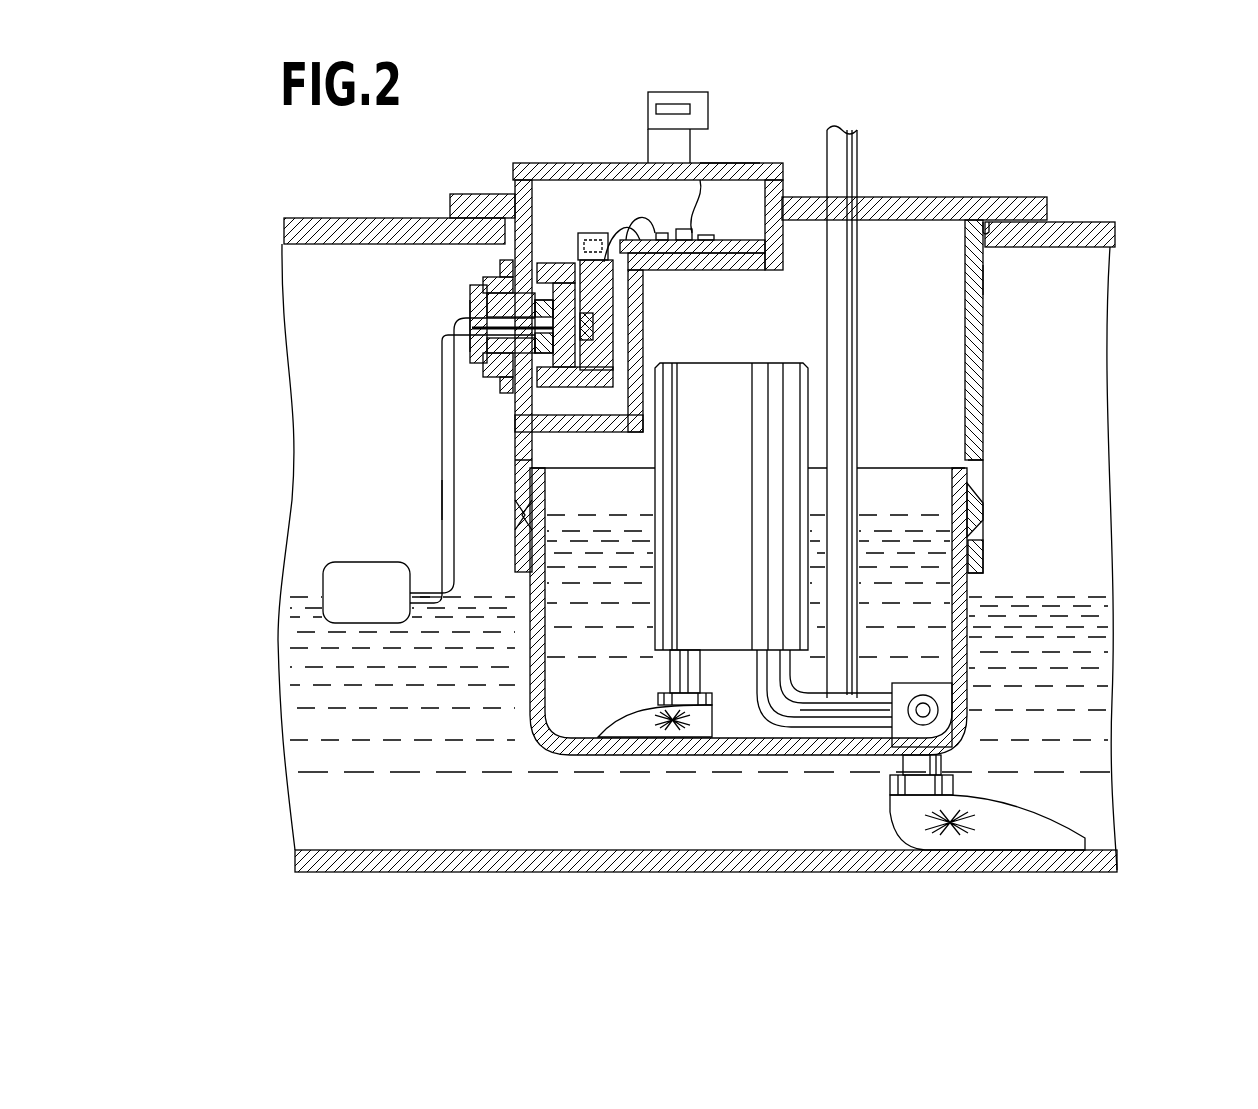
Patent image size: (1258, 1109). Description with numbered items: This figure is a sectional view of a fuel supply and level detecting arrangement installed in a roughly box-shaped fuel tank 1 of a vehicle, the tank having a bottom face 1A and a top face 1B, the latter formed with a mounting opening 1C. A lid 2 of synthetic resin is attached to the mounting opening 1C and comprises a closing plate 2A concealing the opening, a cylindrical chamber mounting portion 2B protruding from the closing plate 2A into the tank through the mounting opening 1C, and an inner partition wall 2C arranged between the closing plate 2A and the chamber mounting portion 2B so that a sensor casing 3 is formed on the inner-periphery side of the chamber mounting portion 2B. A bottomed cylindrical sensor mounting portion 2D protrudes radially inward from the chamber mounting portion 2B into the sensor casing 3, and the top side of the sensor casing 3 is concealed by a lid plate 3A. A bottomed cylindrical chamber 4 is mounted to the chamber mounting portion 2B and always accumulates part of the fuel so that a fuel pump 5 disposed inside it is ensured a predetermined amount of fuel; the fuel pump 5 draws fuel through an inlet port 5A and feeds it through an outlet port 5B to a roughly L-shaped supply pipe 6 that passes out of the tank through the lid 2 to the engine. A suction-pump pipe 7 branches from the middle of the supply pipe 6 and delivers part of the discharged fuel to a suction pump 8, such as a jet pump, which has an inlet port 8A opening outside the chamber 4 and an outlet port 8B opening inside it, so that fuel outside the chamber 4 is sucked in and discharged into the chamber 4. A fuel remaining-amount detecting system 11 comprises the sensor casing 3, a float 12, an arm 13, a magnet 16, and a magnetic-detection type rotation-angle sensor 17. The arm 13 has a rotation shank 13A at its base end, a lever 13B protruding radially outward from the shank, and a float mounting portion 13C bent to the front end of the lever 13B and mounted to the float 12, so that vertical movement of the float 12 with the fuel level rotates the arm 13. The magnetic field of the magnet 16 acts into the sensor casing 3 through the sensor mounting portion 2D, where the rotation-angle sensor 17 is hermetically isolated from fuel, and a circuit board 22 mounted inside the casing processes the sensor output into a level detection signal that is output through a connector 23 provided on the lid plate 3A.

The fuel tank 1 is at (333, 232).
The bottom face 1A is at (381, 862).
The top face 1B is at (1068, 237).
The mounting opening 1C is at (968, 222).
The lid 2 is at (975, 337).
The closing plate 2A is at (885, 205).
The chamber mounting portion 2B is at (975, 280).
The inner partition wall 2C is at (568, 423).
The sensor mounting portion 2D is at (547, 270).
The sensor casing 3 is at (518, 175).
The lid plate 3A is at (742, 172).
The chamber 4 is at (553, 735).
The fuel pump 5 is at (718, 632).
The inlet port 5A is at (682, 660).
The outlet port 5B is at (768, 660).
The supply pipe 6 is at (838, 385).
The suction-pump pipe 7 is at (865, 708).
The suction pump 8 is at (938, 693).
The outlet port 8B is at (935, 715).
The inlet port 8A is at (920, 762).
The fuel remaining-amount detecting system 11 is at (476, 272).
The float 12 is at (347, 600).
The arm 13 is at (445, 532).
The rotation shank 13A is at (488, 305).
The lever 13B is at (443, 500).
The float mounting portion 13C is at (428, 600).
The magnet 16 is at (548, 327).
The rotation-angle sensor 17 is at (566, 262).
The circuit board 22 is at (640, 240).
The connector 23 is at (703, 108).